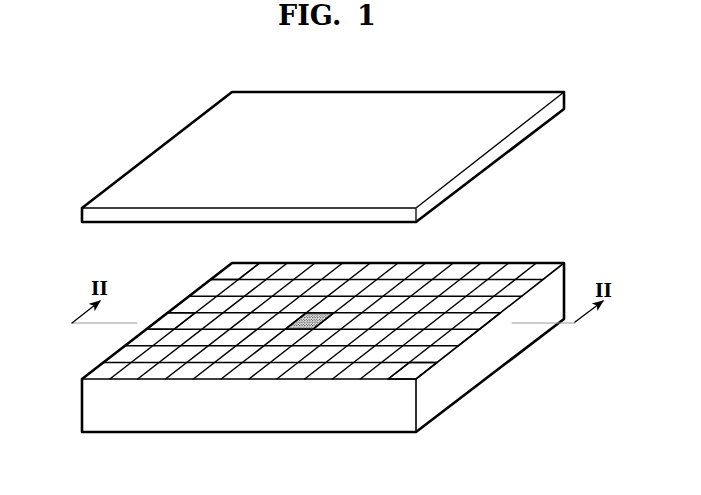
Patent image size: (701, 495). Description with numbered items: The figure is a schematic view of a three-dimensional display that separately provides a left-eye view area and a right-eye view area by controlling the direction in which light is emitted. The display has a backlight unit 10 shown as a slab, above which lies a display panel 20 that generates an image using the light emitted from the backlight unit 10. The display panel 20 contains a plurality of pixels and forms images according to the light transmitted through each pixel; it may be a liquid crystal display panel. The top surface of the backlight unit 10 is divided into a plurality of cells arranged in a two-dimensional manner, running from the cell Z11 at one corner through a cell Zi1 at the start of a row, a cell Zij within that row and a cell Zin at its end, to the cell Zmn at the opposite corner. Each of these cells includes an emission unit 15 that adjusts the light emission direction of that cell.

The backlight unit 10 is at (87, 409).
The emission unit 15 is at (548, 270).
The display panel 20 is at (165, 157).
The cell Z11 is at (230, 275).
The cell Zi1 is at (165, 321).
The cell Zij is at (300, 325).
The cell Zin is at (480, 321).
The cell Zmn is at (411, 374).